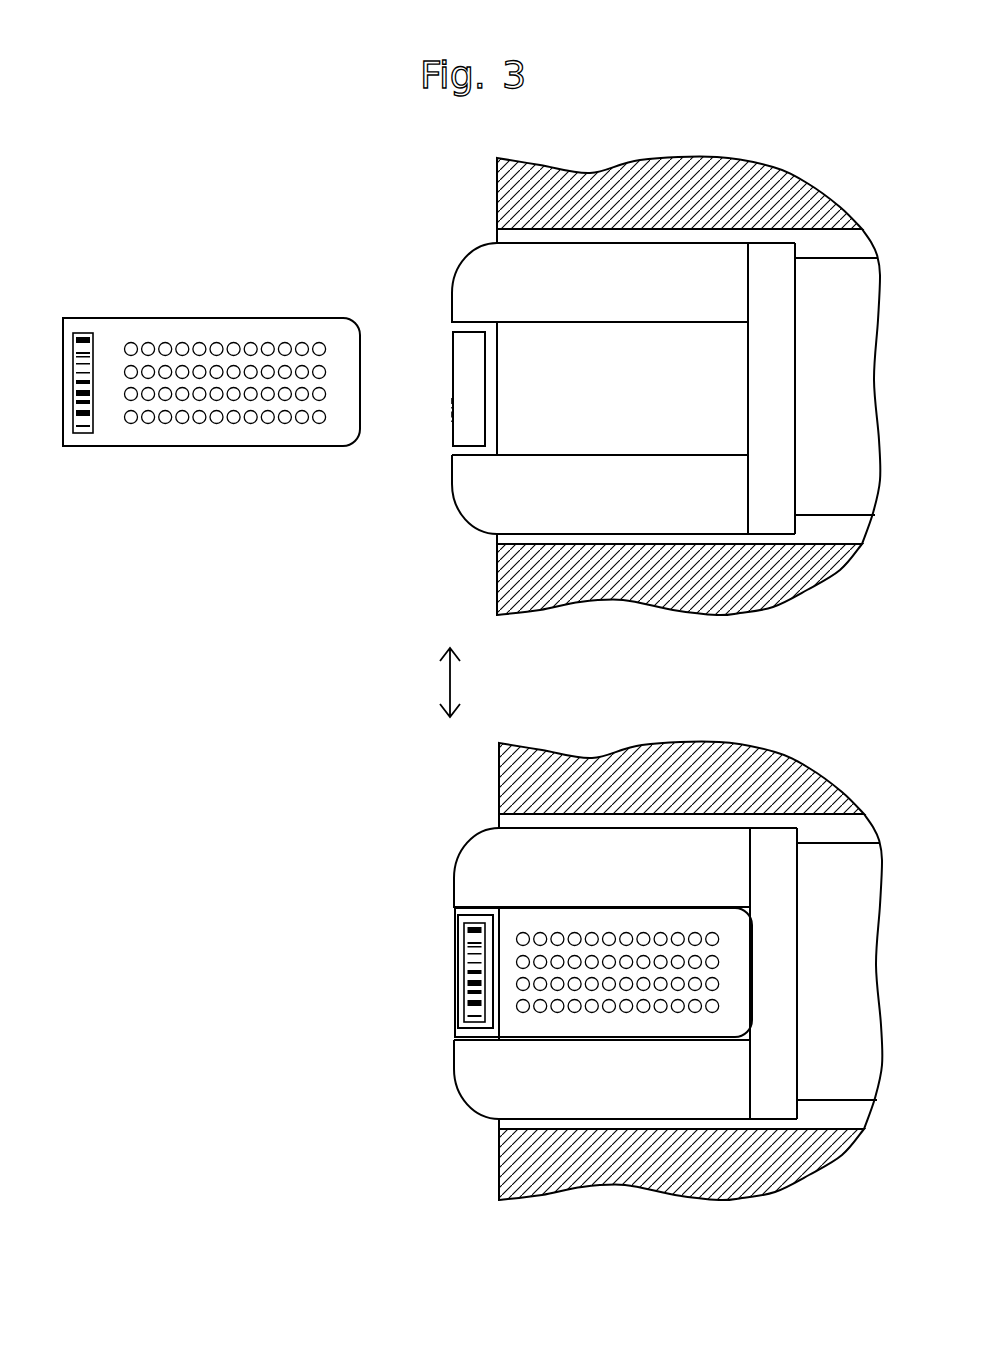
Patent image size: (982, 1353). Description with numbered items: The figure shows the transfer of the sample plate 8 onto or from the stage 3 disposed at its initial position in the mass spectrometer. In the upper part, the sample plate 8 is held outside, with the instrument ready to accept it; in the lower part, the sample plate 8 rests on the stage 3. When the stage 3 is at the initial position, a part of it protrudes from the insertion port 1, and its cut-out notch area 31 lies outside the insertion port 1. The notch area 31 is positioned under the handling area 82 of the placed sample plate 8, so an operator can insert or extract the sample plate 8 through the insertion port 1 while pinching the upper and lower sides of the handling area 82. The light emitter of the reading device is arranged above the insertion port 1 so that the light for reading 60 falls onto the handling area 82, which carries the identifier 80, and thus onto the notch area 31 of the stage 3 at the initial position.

The insertion port 1 is at (474, 551).
The stage 3 is at (462, 262).
The notch area 31 is at (494, 391).
The light for reading 60 is at (452, 358).
The sample plate 8 is at (194, 448).
The barcode 80 is at (83, 332).
The handling area 82 is at (64, 458).